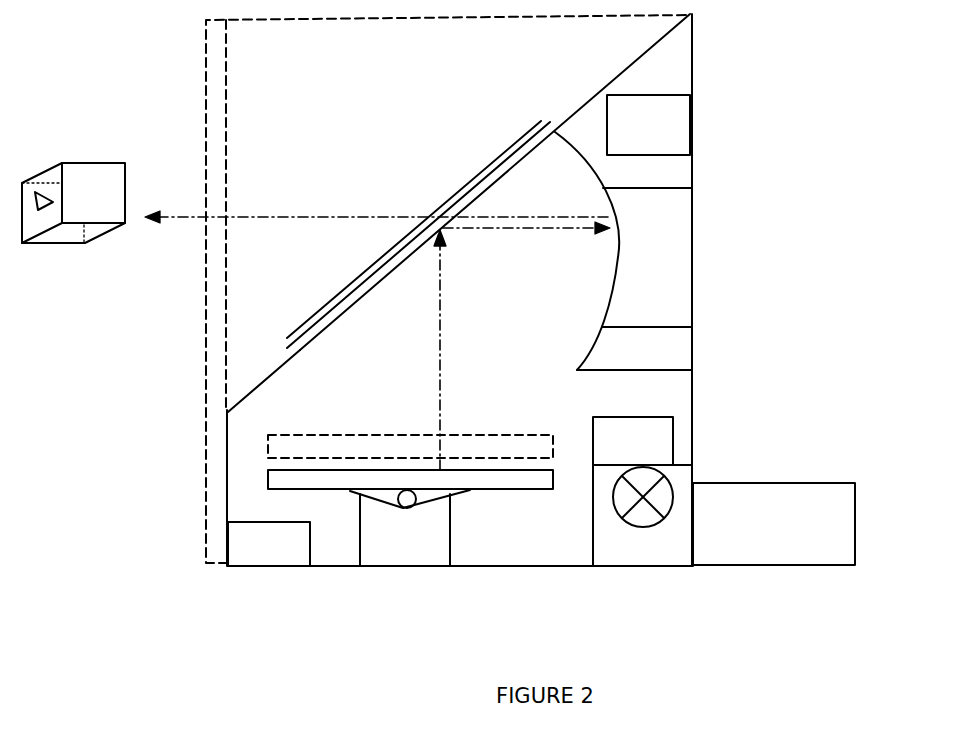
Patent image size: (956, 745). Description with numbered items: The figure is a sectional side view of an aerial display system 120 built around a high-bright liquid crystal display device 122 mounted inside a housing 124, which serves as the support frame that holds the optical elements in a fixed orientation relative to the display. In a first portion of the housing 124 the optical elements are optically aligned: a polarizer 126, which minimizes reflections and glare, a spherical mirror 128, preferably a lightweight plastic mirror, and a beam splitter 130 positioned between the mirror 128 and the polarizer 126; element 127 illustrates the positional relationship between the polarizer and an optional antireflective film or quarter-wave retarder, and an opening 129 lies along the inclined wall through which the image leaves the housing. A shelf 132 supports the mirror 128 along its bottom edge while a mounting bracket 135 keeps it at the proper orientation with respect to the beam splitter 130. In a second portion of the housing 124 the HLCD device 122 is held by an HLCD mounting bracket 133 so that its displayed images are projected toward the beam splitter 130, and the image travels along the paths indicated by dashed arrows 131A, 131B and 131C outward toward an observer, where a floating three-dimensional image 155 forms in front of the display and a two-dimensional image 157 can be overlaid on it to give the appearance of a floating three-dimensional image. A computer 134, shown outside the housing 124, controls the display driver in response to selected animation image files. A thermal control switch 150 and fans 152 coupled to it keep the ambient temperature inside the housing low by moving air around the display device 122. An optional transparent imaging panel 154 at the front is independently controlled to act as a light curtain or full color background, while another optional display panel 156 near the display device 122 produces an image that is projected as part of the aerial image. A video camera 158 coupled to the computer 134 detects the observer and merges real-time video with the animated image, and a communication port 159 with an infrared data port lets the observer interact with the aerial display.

The aerial display system 120 is at (198, 584).
The high-bright liquid crystal display device 122 is at (347, 490).
The housing 124 is at (743, 290).
The polarizer 126 is at (550, 125).
The antireflective film or retarder 127 is at (414, 229).
The spherical mirror 128 is at (553, 251).
The opening 129 is at (283, 360).
The beam splitter 130 is at (495, 188).
The dashed arrow 131A is at (446, 384).
The dashed arrow 131B is at (573, 230).
The dashed arrow 131C is at (262, 217).
The shelf 132 is at (640, 372).
The HLCD mounting bracket 133 is at (452, 528).
The computer 134 is at (774, 524).
The mounting bracket 135 is at (685, 271).
The thermal control switch 150 is at (633, 441).
The fans 152 is at (642, 515).
The transparent imaging panel 154 is at (393, 289).
The floating 3-D image 155 is at (85, 162).
The display panel 156 is at (410, 413).
The 2-D image 157 is at (38, 199).
The video camera 158 is at (648, 125).
The communication port 159 is at (269, 544).